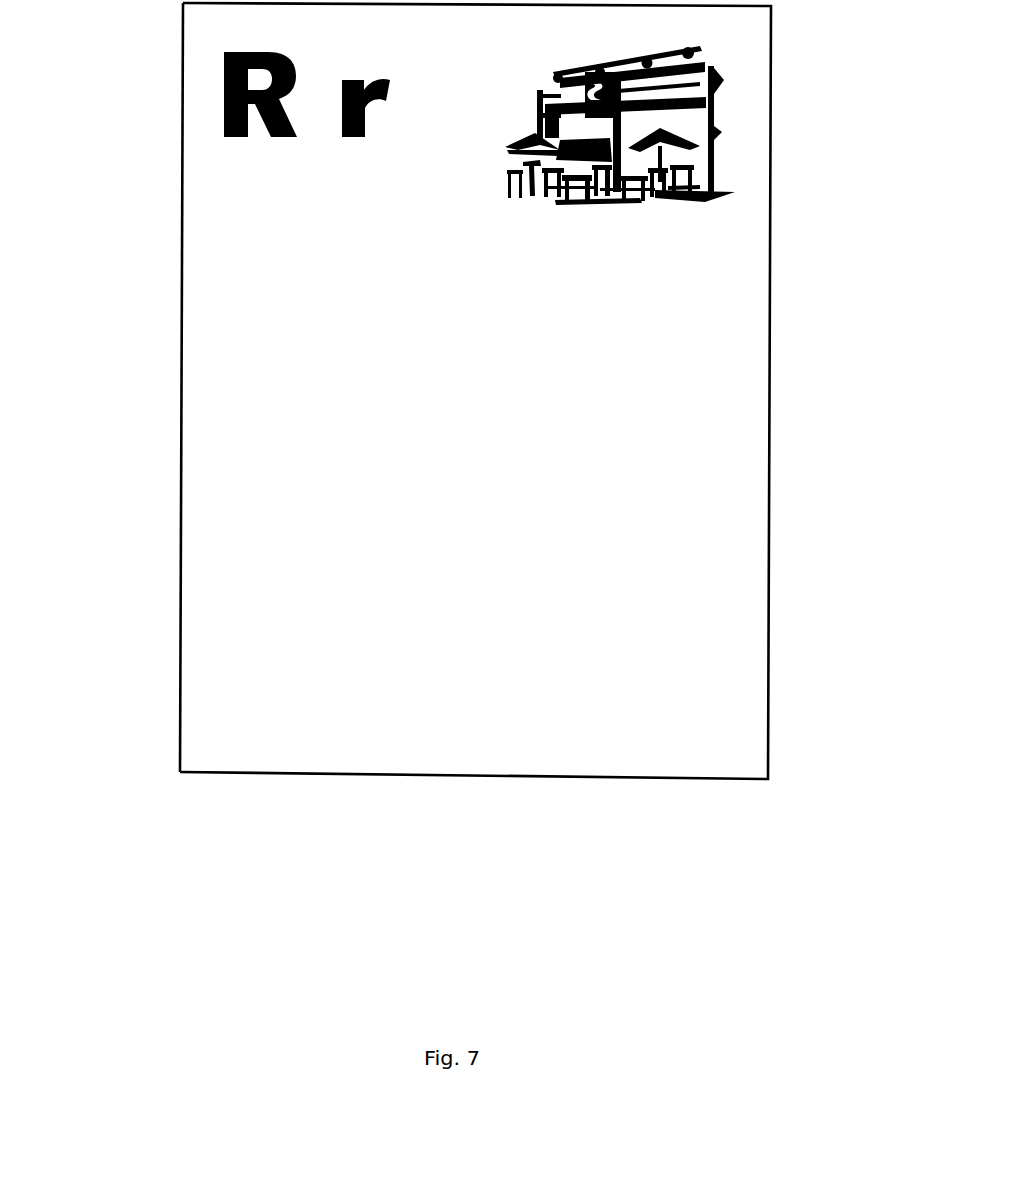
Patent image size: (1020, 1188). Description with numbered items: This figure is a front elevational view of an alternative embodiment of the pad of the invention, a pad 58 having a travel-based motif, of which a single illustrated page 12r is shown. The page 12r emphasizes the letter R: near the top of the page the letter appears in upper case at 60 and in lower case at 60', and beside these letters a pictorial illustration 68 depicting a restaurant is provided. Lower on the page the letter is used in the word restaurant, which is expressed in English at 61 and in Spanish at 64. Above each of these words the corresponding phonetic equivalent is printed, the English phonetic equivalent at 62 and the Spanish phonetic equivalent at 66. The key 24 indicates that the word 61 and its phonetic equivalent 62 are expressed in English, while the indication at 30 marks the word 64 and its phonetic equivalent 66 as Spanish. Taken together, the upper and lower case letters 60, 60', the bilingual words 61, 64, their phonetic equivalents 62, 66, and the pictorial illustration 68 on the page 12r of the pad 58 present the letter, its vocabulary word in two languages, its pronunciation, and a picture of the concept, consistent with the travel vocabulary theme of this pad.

The page 12r is at (717, 395).
The key 24 is at (205, 610).
The Spanish indication 30 is at (742, 619).
The pad 58 is at (172, 391).
The upper case letter 60 is at (260, 139).
The lower case letter 60' is at (366, 152).
The English word 61 is at (205, 714).
The English phonetic equivalent 62 is at (205, 652).
The Spanish word 64 is at (742, 722).
The Spanish phonetic equivalent 66 is at (742, 660).
The pictorial illustration 68 is at (625, 209).